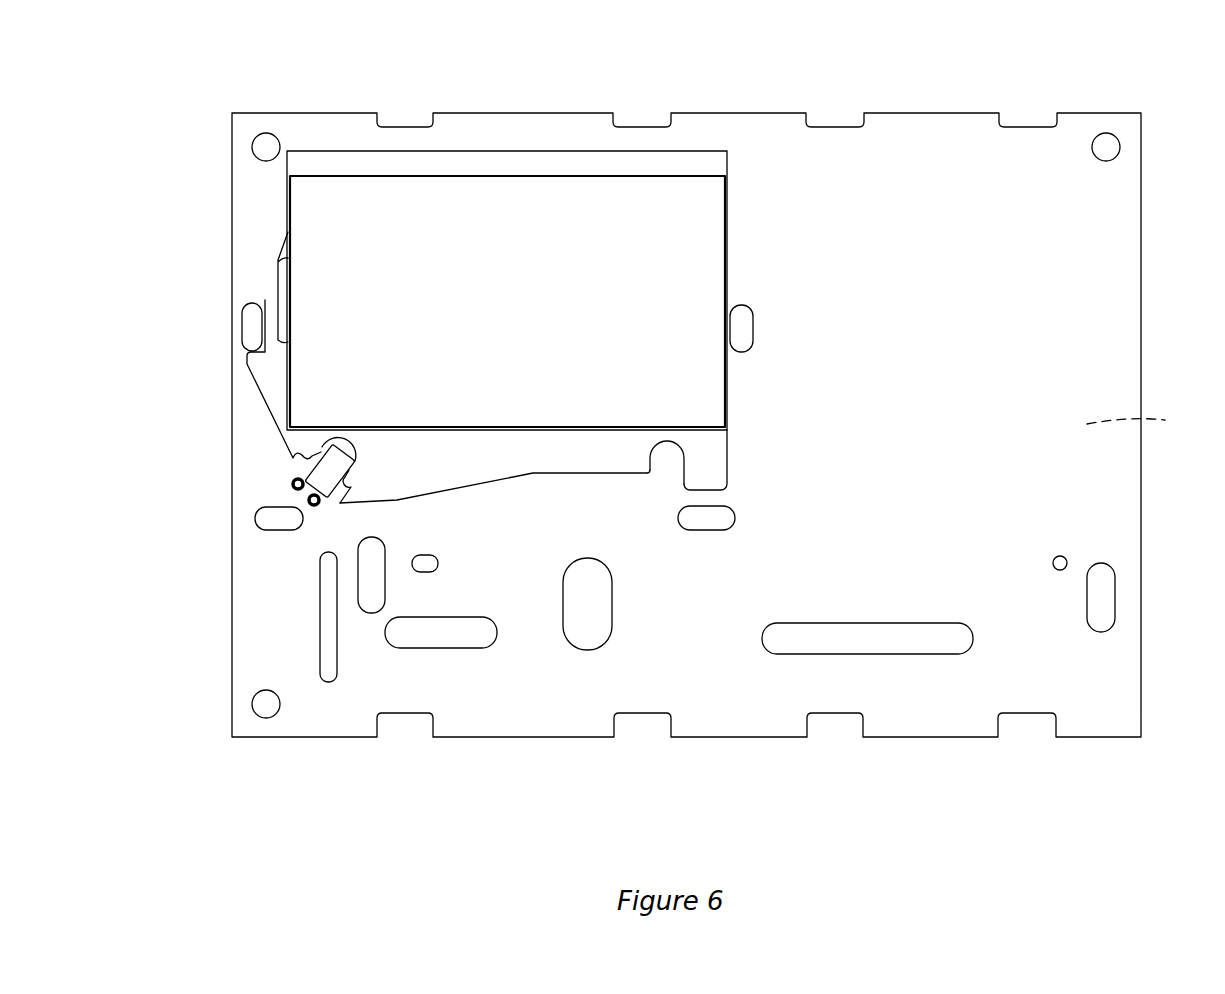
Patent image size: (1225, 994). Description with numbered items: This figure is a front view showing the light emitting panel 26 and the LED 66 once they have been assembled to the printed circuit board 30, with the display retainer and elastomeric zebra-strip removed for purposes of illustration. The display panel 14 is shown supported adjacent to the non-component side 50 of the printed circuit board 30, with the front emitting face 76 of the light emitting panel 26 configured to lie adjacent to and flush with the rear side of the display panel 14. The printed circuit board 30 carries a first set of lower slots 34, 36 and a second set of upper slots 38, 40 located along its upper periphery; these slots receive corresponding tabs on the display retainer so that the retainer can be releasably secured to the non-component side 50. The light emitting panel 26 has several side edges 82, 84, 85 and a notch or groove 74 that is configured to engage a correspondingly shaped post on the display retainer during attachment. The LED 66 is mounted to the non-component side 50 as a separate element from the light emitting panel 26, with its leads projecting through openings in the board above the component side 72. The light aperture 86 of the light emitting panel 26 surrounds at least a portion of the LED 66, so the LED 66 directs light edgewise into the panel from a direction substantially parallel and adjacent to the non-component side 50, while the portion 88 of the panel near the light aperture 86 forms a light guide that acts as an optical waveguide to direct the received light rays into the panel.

The display panel 14 is at (680, 233).
The light emitting panel 26 is at (272, 302).
The printed circuit board 30 is at (1107, 333).
The lower slot 34 is at (268, 520).
The lower slot 36 is at (705, 522).
The upper slot 38 is at (405, 126).
The upper slot 40 is at (643, 126).
The non-component side 50 is at (941, 390).
The LED 66 is at (318, 473).
The component side 72 is at (1150, 424).
The notch or groove 74 is at (666, 470).
The front emitting face 76 is at (501, 453).
The side edge 82 is at (510, 480).
The side edge 84 is at (275, 415).
The side edge 85 is at (728, 455).
The light aperture 86 is at (322, 511).
The light guide portion 88 is at (385, 474).